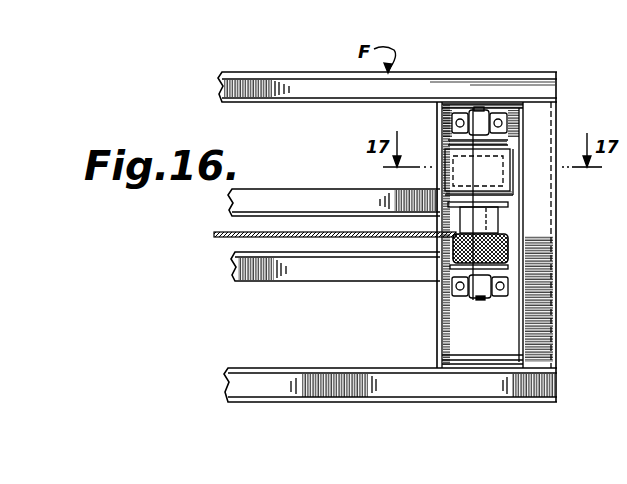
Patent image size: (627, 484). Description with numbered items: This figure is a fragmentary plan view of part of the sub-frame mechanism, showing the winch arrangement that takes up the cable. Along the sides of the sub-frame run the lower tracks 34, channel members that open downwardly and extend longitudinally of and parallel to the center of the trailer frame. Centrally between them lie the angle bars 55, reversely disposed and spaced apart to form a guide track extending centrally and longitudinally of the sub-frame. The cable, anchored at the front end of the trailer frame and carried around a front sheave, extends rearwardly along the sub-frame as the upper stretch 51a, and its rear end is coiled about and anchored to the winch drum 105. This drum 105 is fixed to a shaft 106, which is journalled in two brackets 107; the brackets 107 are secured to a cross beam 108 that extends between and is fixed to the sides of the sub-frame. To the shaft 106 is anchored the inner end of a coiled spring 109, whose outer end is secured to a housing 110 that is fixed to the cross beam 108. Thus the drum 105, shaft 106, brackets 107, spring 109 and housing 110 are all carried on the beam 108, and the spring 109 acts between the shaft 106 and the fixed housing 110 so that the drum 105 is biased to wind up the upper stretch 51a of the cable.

The lower track 34 is at (313, 85).
The angle bar 55 is at (313, 198).
The upper stretch 51a is at (343, 237).
The cross beam 108 is at (453, 319).
The bracket 107 is at (499, 112).
The coiled spring 109 is at (507, 158).
The housing 110 is at (512, 178).
The winch drum 105 is at (500, 217).
The shaft 106 is at (481, 299).